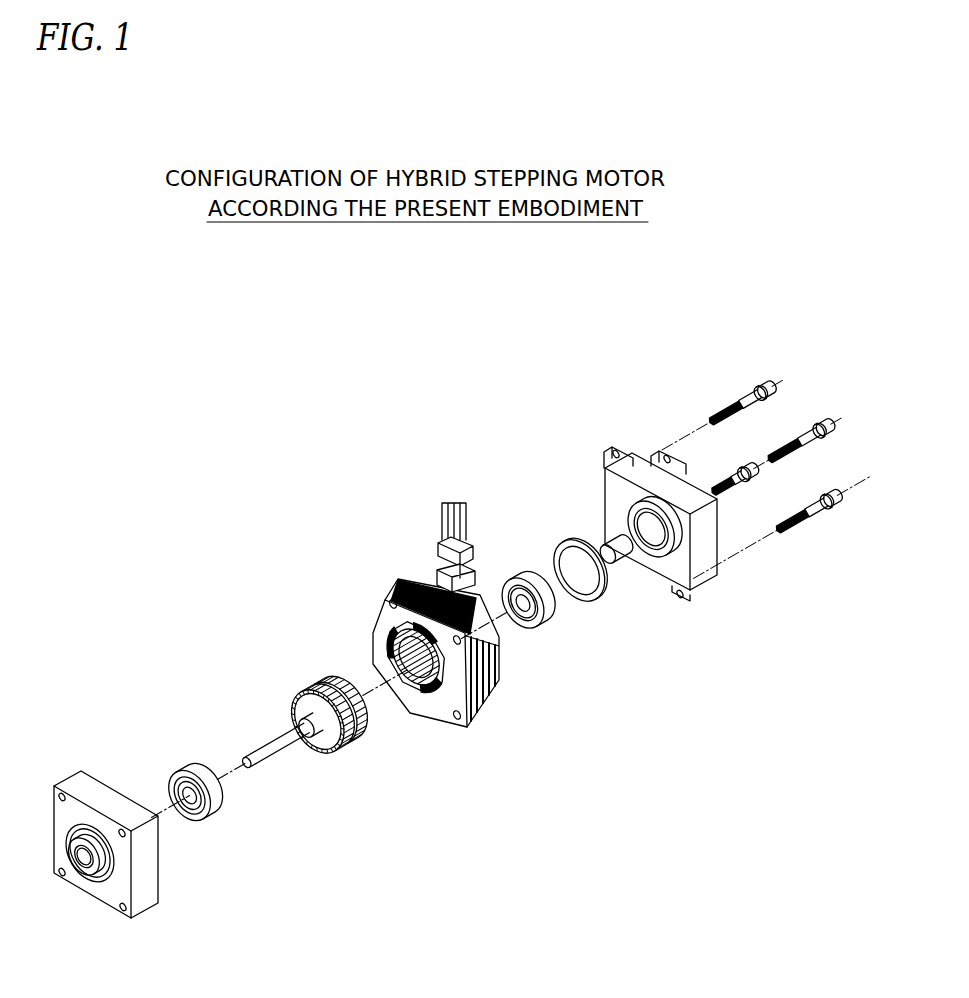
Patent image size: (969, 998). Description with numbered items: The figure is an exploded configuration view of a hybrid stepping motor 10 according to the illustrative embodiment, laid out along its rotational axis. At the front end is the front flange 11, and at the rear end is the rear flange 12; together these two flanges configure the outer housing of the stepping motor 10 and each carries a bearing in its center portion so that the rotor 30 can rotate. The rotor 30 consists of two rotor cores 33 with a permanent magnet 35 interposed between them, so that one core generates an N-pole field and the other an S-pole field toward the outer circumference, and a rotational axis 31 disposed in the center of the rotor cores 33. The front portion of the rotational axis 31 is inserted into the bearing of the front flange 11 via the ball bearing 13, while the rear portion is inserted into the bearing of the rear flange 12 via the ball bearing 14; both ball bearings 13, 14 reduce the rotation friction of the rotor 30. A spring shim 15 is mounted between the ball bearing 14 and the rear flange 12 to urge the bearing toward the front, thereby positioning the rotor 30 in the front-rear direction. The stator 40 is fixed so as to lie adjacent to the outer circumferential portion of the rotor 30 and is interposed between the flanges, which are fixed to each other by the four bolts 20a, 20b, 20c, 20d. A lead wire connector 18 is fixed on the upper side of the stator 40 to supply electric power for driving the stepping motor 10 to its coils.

The stepping motor 10 is at (347, 522).
The front flange 11 is at (157, 903).
The rear flange 12 is at (670, 598).
The ball bearing 13 is at (223, 810).
The ball bearing 14 is at (538, 633).
The spring shim 15 is at (595, 598).
The lead wire connector 18 is at (467, 514).
The bolt 20a is at (713, 414).
The bolt 20b is at (828, 420).
The bolt 20c is at (737, 487).
The bolt 20d is at (811, 512).
The rotor 30 is at (350, 752).
The rotational axis 31 is at (261, 767).
The rotor core 33 is at (300, 707).
The magnet 35 is at (324, 671).
The stator 40 is at (485, 708).